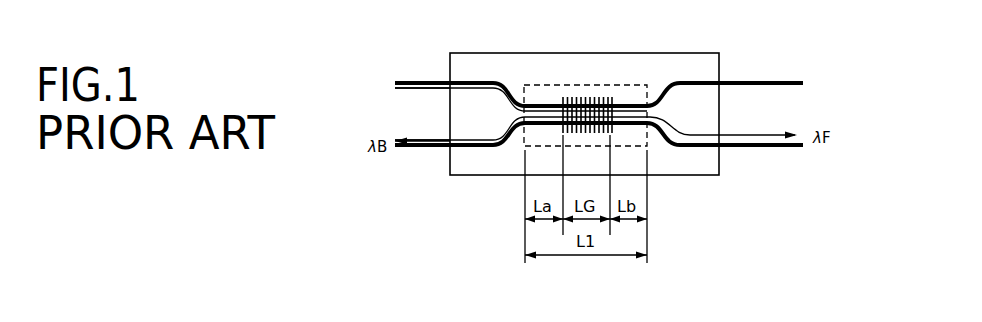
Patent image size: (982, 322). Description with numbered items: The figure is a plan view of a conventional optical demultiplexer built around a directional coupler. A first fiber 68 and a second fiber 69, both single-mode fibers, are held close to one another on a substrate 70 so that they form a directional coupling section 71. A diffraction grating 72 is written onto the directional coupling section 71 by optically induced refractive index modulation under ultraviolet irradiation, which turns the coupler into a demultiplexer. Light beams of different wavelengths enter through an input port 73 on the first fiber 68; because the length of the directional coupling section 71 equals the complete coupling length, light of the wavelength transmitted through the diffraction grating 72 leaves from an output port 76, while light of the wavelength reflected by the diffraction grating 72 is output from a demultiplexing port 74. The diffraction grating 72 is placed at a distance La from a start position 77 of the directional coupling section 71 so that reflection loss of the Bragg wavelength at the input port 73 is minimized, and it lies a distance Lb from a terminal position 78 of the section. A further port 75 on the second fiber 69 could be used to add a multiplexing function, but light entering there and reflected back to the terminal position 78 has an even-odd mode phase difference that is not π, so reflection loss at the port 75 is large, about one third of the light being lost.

The first fiber 68 is at (420, 80).
The second fiber 69 is at (422, 148).
The substrate 70 is at (702, 52).
The directional coupling section 71 is at (557, 84).
The diffraction grating 72 is at (593, 94).
The input port 73 is at (393, 88).
The demultiplexing port 74 is at (397, 152).
The port 75 is at (803, 81).
The output port 76 is at (805, 148).
The start position 77 is at (524, 137).
The terminal position 78 is at (650, 148).